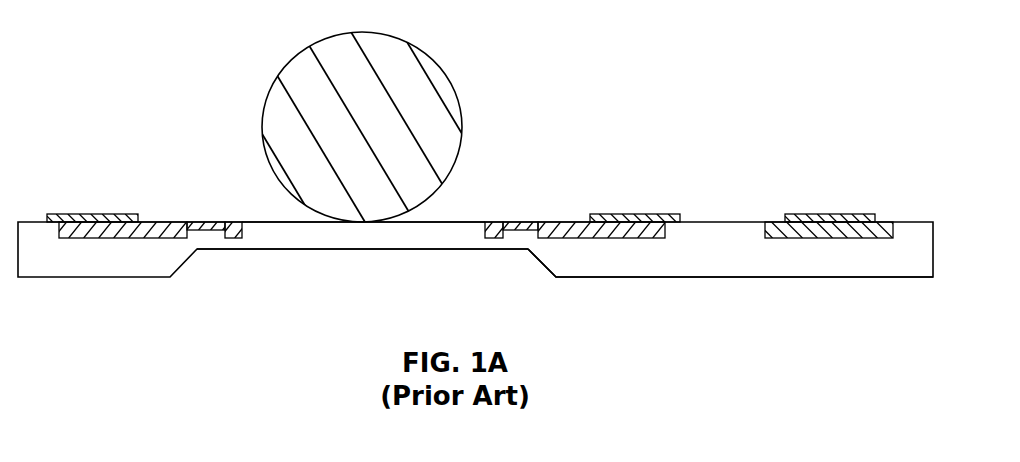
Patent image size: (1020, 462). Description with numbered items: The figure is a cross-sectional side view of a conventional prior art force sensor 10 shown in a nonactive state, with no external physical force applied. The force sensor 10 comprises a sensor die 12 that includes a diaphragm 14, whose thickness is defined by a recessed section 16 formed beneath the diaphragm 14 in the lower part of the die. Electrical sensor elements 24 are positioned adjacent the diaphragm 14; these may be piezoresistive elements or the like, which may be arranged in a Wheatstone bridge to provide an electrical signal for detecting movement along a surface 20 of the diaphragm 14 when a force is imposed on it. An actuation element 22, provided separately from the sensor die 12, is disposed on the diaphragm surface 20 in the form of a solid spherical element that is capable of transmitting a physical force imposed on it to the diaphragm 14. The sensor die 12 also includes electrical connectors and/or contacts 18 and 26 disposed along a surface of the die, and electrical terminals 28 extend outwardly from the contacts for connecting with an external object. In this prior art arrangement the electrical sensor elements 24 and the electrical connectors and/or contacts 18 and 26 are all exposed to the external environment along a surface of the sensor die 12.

The force sensor 10 is at (593, 73).
The sensor die 12 is at (725, 222).
The diaphragm 14 is at (283, 237).
The recessed section 16 is at (518, 267).
The electrical connectors and/or contacts 18 is at (233, 227).
The diaphragm surface 20 is at (452, 222).
The actuation element 22 is at (313, 68).
The electrical sensor elements 24 is at (207, 222).
The electrical connectors and/or contacts 26 is at (163, 228).
The electrical terminals 28 is at (92, 212).